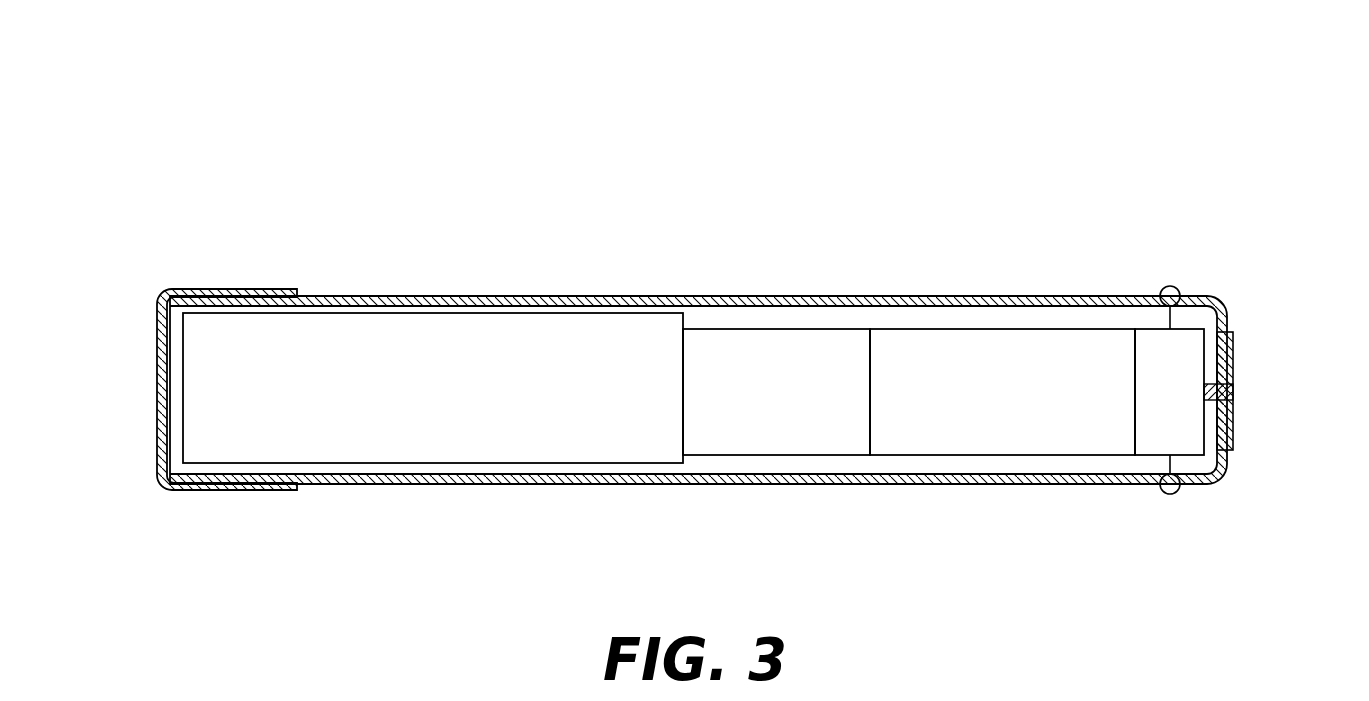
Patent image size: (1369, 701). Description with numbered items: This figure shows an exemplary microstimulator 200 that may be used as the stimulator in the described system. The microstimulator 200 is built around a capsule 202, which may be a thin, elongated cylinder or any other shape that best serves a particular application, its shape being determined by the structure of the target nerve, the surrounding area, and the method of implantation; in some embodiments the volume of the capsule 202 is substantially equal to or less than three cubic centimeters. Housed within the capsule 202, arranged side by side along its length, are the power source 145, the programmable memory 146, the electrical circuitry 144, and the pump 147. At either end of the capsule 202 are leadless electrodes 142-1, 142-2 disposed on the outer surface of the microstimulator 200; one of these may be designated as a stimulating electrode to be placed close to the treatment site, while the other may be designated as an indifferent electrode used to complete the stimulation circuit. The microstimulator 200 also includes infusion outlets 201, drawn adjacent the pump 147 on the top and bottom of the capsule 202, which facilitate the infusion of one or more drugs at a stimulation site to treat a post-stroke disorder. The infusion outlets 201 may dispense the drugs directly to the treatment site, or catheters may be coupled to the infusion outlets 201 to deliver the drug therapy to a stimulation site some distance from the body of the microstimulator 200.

The microstimulator 200 is at (440, 233).
The capsule 202 is at (597, 296).
The electrode 142-1 is at (157, 390).
The electrode 142-2 is at (1235, 375).
The infusion outlet 201 is at (1170, 286).
The power source 145 is at (453, 432).
The programmable memory 146 is at (802, 436).
The electrical circuitry 144 is at (1045, 430).
The pump 147 is at (1197, 417).